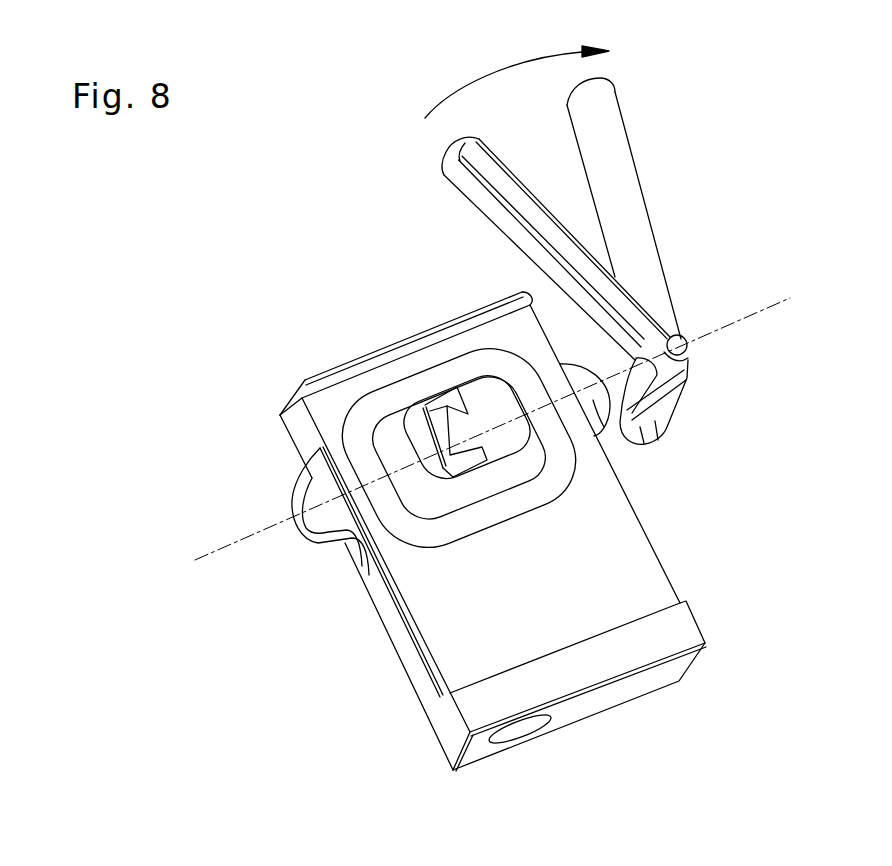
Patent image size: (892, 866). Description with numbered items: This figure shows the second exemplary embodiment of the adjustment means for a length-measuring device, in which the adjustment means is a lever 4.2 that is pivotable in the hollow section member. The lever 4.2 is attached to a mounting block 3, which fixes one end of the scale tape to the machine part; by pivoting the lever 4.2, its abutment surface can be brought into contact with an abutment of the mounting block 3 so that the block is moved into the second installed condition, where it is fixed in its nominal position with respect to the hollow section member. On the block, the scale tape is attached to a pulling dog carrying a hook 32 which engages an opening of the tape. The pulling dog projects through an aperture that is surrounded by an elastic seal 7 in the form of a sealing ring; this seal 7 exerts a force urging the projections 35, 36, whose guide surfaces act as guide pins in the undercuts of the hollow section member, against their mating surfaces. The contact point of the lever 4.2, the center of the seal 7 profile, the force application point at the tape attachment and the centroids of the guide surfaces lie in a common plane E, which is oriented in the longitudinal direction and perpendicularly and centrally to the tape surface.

The mounting block 3 is at (323, 400).
The elastic seal 7 is at (432, 382).
The hook 32 is at (465, 432).
The projection 35 is at (322, 537).
The projection 36 is at (598, 434).
The lever 4.2 is at (445, 177).
The plane E is at (775, 310).